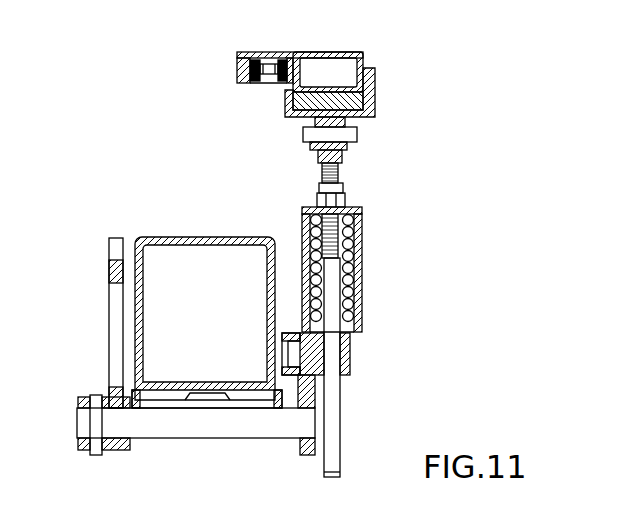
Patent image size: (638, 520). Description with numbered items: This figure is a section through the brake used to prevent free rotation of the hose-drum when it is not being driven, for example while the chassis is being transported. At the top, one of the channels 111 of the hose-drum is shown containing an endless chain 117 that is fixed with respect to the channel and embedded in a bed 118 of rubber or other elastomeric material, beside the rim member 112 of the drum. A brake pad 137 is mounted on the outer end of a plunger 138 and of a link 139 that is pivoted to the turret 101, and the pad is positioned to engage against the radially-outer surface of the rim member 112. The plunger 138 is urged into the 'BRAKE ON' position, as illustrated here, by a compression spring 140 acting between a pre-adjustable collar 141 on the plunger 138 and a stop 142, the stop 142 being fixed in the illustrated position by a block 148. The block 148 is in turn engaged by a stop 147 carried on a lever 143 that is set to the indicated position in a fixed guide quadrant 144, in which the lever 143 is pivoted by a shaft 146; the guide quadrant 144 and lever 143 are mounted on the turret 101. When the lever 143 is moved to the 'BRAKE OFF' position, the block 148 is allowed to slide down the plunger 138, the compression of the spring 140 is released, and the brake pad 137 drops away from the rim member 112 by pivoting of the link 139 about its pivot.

The turret 101 is at (172, 238).
The channel 111 is at (232, 56).
The rim member 112 is at (350, 53).
The endless chain 117 is at (255, 83).
The bed 118 is at (283, 80).
The brake pad 137 is at (372, 100).
The plunger 138 is at (344, 236).
The link 139 is at (345, 155).
The compression spring 140 is at (362, 280).
The pre-adjustable collar 141 is at (305, 209).
The stop 142 is at (352, 333).
The lever 143 is at (90, 395).
The guide quadrant 144 is at (110, 268).
The shaft 146 is at (247, 443).
The stop 147 is at (308, 400).
The block 148 is at (350, 355).